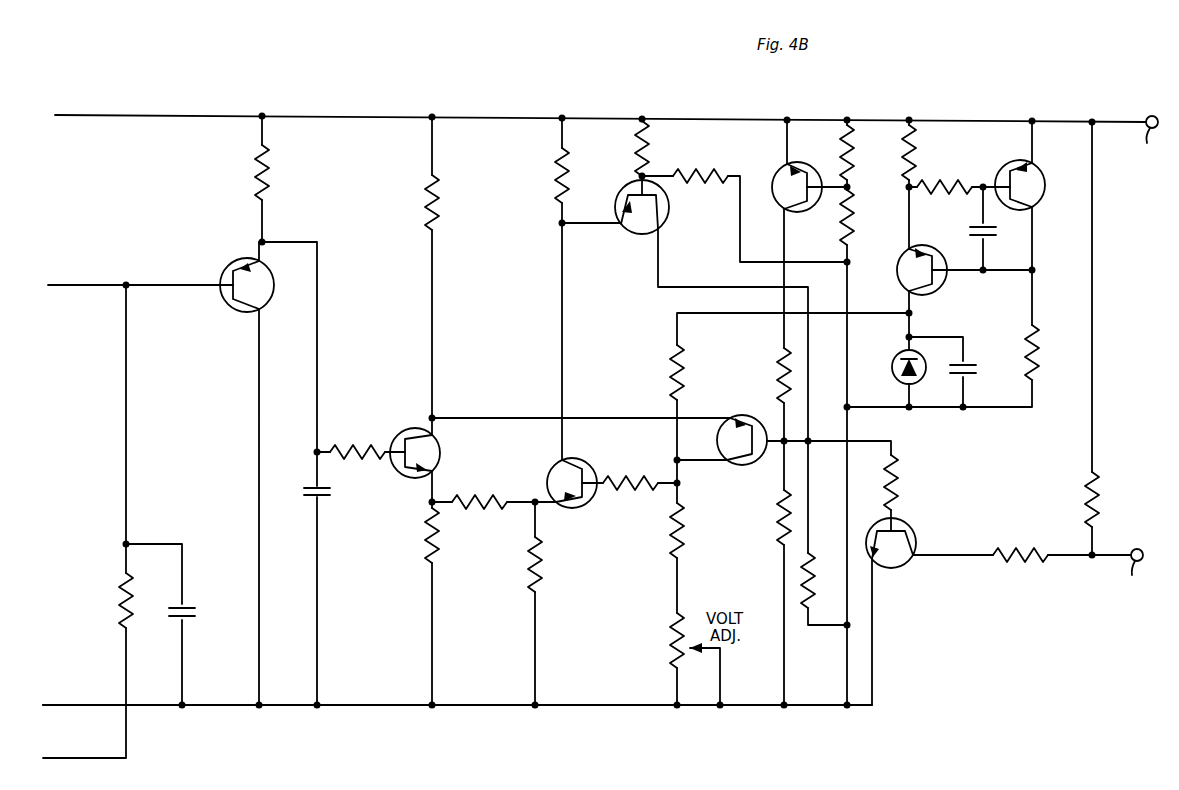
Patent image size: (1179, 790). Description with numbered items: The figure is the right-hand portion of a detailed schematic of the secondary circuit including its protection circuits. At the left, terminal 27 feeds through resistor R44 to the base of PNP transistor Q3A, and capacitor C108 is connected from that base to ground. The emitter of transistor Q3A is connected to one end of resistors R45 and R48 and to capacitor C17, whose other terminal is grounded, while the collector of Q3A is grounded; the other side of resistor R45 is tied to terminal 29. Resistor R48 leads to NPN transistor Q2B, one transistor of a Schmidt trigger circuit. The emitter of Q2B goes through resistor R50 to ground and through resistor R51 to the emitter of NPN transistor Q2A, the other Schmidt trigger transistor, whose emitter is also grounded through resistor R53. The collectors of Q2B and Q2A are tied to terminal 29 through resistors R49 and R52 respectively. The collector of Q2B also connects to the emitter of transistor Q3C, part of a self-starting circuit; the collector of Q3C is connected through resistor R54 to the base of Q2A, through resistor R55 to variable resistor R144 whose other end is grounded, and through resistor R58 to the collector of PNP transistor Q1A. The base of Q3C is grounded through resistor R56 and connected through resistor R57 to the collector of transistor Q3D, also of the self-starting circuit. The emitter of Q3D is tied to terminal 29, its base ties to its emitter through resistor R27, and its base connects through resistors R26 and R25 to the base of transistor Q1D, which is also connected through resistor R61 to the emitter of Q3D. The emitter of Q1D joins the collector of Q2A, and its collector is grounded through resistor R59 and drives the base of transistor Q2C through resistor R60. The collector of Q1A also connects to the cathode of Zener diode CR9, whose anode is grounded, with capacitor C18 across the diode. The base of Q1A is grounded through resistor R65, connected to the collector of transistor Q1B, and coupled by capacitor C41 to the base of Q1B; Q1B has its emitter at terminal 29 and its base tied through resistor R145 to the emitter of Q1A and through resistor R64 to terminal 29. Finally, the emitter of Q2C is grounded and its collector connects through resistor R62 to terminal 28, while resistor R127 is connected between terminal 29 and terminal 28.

The resistor R45 is at (280, 172).
The resistor R49 is at (408, 202).
The resistor R52 is at (537, 175).
The resistor R61 is at (620, 148).
The resistor R25 is at (700, 188).
The resistor R27 is at (826, 152).
The resistor R26 is at (825, 217).
The resistor R64 is at (931, 152).
The resistor R145 is at (945, 176).
The resistor R65 is at (1050, 352).
The resistor R127 is at (1115, 499).
The resistor R62 is at (1020, 546).
The resistor R60 is at (908, 482).
The resistor R58 is at (656, 372).
The resistor R57 is at (762, 375).
The resistor R54 is at (630, 472).
The resistor R55 is at (653, 530).
The resistor R56 is at (762, 517).
The variable resistor R144 is at (646, 640).
The resistor R59 is at (807, 602).
The resistor R50 is at (410, 535).
The resistor R53 is at (513, 564).
The resistor R51 is at (479, 491).
The resistor R48 is at (357, 440).
The resistor R44 is at (101, 600).
The capacitor C17 is at (332, 493).
The capacitor C108 is at (200, 603).
The capacitor C41 is at (963, 227).
The capacitor C18 is at (975, 383).
The Zener diode CR9 is at (891, 356).
The PNP transistor Q3A is at (225, 280).
The NPN transistor Q2B is at (433, 453).
The NPN transistor Q2A is at (572, 470).
The transistor Q1D is at (636, 218).
The transistor Q3D is at (777, 177).
The transistor Q3C is at (742, 451).
The PNP transistor Q1A is at (937, 278).
The transistor Q1B is at (1033, 194).
The transistor Q2C is at (891, 555).
The terminal 27 is at (59, 723).
The terminal 28 is at (1130, 576).
The terminal 29 is at (1145, 143).